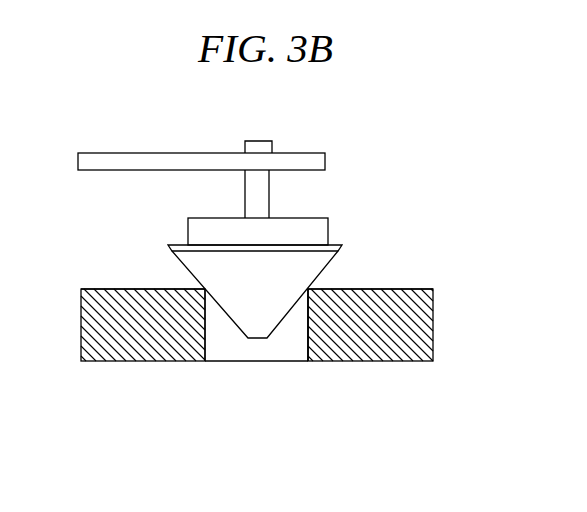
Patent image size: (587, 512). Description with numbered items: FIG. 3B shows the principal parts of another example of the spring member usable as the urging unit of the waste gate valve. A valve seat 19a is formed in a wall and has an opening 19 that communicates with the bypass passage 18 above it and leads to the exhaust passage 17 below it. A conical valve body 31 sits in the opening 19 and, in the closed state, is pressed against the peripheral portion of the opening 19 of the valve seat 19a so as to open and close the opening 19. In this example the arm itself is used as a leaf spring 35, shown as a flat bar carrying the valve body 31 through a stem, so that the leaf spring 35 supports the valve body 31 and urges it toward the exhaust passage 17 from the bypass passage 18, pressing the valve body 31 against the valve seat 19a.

The leaf spring 35 is at (317, 163).
The valve body 31 is at (176, 258).
The exhaust passage 17 is at (404, 422).
The bypass passage 18 is at (412, 253).
The opening 19 is at (220, 346).
The valve seat 19a is at (307, 290).